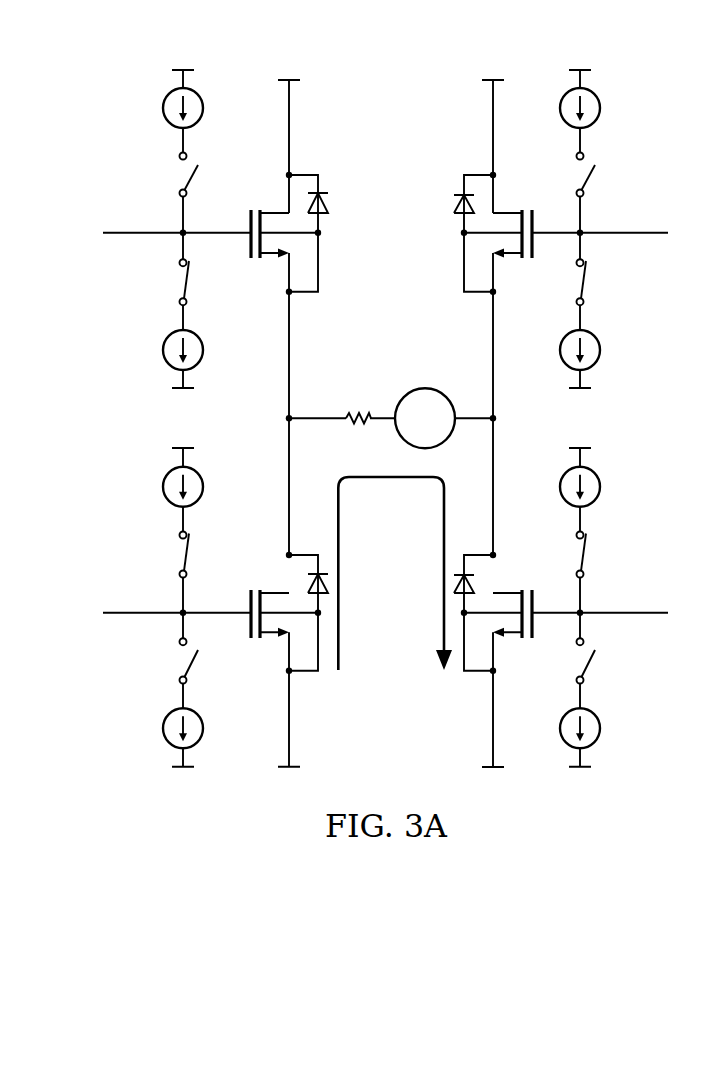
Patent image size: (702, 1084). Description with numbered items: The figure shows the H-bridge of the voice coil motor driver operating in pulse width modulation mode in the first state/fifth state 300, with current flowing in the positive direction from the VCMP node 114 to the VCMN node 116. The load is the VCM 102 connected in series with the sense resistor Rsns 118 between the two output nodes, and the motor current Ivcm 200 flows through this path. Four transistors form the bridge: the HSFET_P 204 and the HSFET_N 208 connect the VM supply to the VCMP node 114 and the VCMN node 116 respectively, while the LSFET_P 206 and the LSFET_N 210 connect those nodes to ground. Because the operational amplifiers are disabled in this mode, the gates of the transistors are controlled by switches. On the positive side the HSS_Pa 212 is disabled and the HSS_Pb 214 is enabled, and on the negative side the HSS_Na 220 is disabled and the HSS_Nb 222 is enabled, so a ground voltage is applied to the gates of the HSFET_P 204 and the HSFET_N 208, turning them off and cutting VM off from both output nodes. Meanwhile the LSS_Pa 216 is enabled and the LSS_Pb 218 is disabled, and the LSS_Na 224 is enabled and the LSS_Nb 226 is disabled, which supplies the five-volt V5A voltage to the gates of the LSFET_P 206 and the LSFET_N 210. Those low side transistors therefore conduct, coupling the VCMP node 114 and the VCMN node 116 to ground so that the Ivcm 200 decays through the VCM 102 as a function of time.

The first state (S1)/fifth state (S5) 300 is at (645, 763).
The VCM 102 is at (425, 388).
The Rsns 118 is at (358, 413).
The VCMP node 114 is at (284, 421).
The VCMN node 116 is at (498, 421).
The Ivcm 200 is at (389, 479).
The HSFET_P 204 is at (320, 167).
The HSFET_N 208 is at (462, 167).
The LSFET_P 206 is at (312, 684).
The LSFET_N 210 is at (470, 684).
The HSS_Pa 212 is at (186, 173).
The HSS_Pb 214 is at (180, 280).
The LSS_Pa 216 is at (180, 552).
The LSS_Pb 218 is at (187, 660).
The HSS_Na 220 is at (587, 173).
The HSS_Nb 222 is at (578, 280).
The LSS_Na 224 is at (578, 550).
The LSS_Nb 226 is at (577, 662).